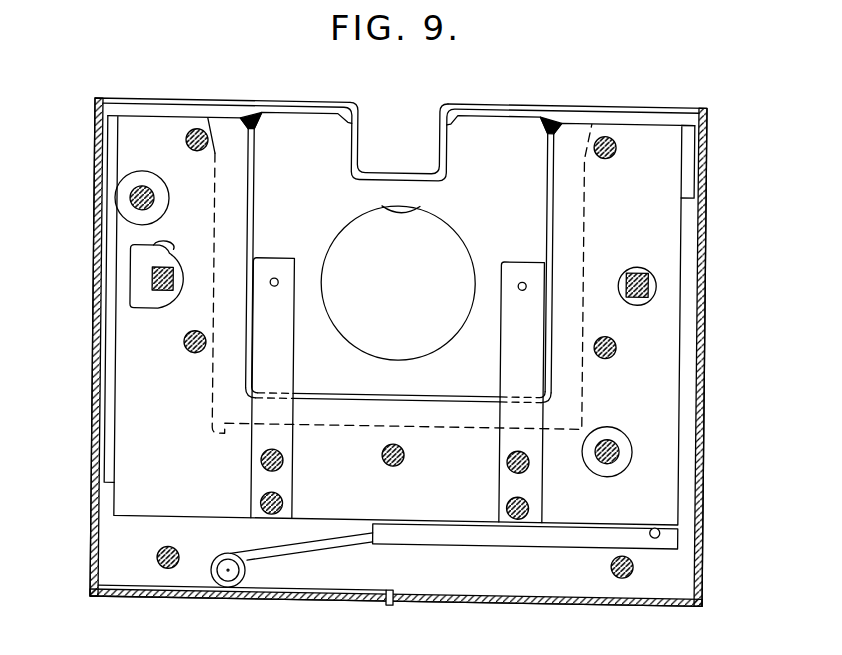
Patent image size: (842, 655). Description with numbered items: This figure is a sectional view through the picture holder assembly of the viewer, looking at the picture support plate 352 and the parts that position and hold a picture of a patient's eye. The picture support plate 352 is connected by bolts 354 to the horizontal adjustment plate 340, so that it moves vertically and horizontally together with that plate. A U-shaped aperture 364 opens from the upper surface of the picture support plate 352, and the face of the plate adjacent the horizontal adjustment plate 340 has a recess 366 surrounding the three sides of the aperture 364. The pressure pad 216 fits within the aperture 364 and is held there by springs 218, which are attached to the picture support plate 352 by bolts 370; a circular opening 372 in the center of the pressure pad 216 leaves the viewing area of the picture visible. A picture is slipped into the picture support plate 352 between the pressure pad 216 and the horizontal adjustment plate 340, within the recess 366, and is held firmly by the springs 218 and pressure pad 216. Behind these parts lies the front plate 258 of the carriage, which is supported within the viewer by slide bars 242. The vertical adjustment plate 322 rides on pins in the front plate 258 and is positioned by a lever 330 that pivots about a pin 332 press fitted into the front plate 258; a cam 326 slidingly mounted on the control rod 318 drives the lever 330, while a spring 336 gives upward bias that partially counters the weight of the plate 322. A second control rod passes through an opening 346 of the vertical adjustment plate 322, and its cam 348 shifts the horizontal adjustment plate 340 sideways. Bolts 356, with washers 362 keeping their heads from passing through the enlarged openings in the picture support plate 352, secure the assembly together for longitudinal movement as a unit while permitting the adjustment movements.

The pressure pad 216 is at (300, 135).
The springs 218 is at (273, 364).
The slide bars 242 is at (171, 546).
The front plate 258 is at (703, 208).
The control rod 318 is at (658, 285).
The vertical adjustment plate 322 is at (696, 154).
The cam 326 is at (651, 297).
The lever 330 is at (455, 538).
The pin 332 is at (665, 535).
The spring 336 is at (316, 543).
The horizontal adjustment plate 340 is at (551, 127).
The opening 346 is at (160, 251).
The cam 348 is at (149, 294).
The picture support plate 352 is at (660, 140).
The bolts 354 is at (197, 129).
The bolts 356 is at (132, 194).
The washers 362 is at (124, 183).
The U-shaped aperture 364 is at (254, 167).
The recess 366 is at (226, 143).
The bolts 370 is at (261, 498).
The circular opening 372 is at (352, 224).